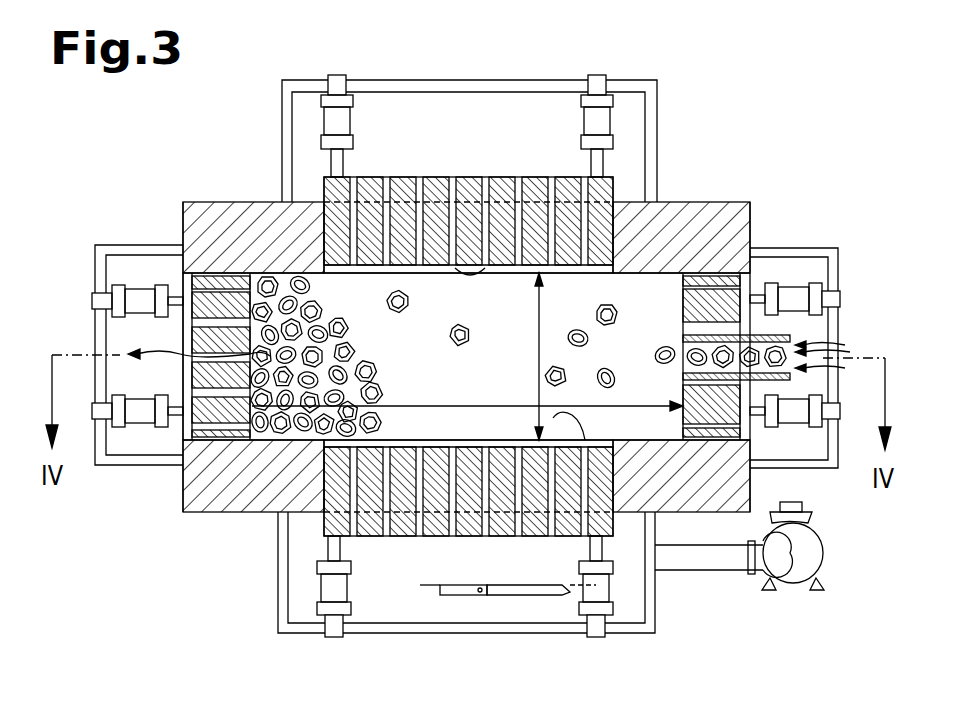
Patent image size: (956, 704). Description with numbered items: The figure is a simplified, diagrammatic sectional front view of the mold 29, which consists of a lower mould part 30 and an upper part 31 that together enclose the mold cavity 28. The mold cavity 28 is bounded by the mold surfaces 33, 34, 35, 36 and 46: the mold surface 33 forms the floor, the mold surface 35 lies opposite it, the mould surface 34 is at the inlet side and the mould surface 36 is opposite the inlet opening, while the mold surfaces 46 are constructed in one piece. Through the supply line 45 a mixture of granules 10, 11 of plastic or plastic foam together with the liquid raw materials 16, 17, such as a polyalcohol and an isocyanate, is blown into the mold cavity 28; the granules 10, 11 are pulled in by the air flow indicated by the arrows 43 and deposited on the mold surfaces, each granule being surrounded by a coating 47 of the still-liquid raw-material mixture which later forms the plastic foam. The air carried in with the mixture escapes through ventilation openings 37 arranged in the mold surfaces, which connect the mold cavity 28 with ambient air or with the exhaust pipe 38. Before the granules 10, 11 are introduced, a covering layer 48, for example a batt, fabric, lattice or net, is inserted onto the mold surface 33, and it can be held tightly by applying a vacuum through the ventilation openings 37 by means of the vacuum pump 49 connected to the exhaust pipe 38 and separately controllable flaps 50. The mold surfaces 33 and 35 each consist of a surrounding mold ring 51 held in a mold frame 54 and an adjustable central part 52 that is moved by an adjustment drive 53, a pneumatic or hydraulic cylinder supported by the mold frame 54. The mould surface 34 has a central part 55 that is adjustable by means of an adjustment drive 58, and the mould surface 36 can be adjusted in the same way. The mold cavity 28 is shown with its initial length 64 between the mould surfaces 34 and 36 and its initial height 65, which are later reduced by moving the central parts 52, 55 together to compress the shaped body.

The granules 10 is at (193, 330).
The granules 11 is at (327, 276).
The liquid raw material 16 is at (407, 304).
The liquid raw material 17 is at (470, 345).
The mold cavity 28 is at (657, 428).
The mold 29 is at (186, 154).
The lower mould part 30 is at (213, 500).
The upper part 31 is at (697, 240).
The mold surface 33 is at (482, 538).
The mould surface 34 is at (252, 358).
The mold surface 35 is at (466, 270).
The mould surface 36 is at (678, 300).
The ventilation openings 37 is at (468, 394).
The exhaust pipe 38 is at (447, 572).
The arrows 43 is at (470, 165).
The supply line 45 is at (722, 300).
The mold surfaces 46 is at (585, 440).
The coating 47 is at (310, 285).
The covering layer 48 is at (428, 440).
The vacuum pump 49 is at (797, 582).
The flaps 50 is at (457, 590).
The mold ring 51 is at (752, 178).
The central part 52 is at (514, 224).
The adjustment drive 53 is at (337, 120).
The mold frame 54 is at (402, 82).
The central part 55 is at (474, 282).
The adjustment drive 58 is at (140, 297).
The initial length 64 is at (638, 404).
The initial height 65 is at (538, 360).